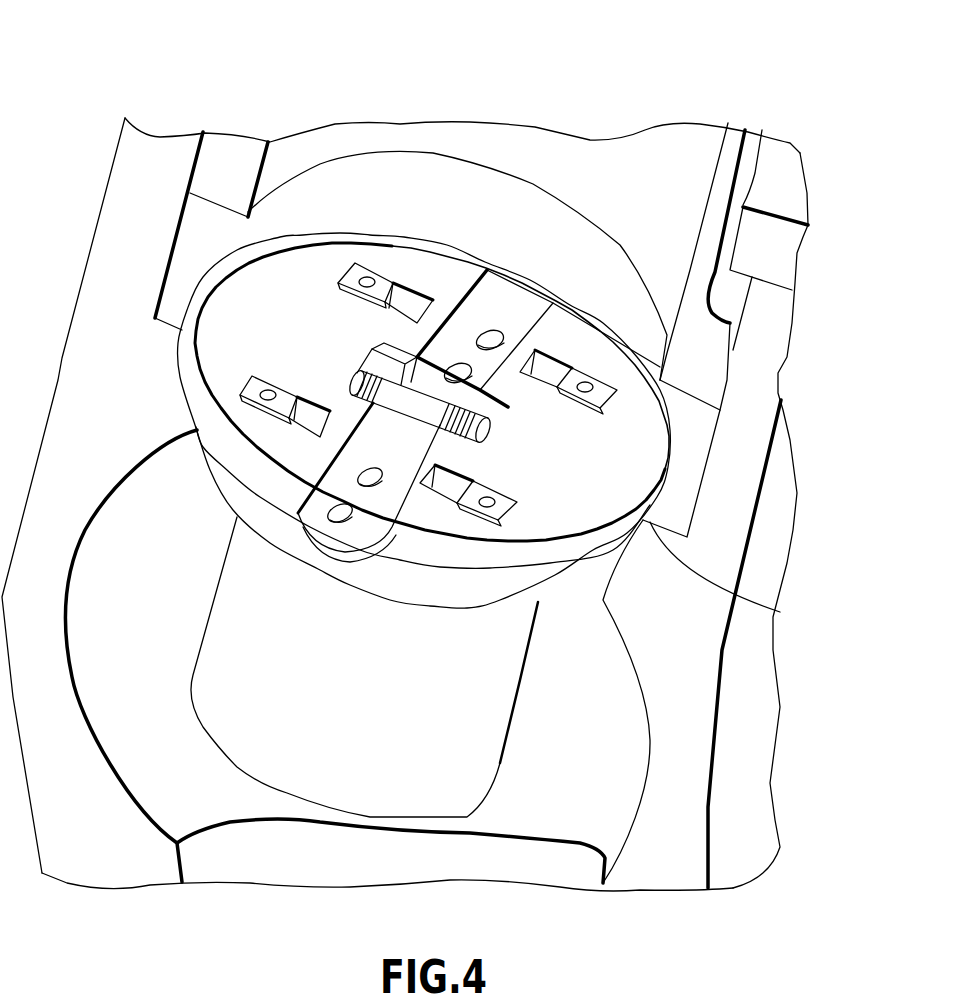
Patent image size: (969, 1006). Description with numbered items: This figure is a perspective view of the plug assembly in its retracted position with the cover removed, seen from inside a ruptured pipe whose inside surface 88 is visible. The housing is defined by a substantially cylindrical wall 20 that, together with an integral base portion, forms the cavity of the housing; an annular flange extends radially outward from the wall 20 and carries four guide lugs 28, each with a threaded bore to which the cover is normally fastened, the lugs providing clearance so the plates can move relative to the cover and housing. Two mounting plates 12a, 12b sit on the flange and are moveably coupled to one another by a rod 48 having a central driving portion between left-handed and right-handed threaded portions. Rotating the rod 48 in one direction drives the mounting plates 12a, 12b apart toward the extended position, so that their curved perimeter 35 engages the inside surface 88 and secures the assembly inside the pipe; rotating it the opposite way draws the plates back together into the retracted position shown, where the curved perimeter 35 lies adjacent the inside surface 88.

The inside surface 88 is at (302, 195).
The mounting plate 12a is at (381, 262).
The mounting plate 12b is at (573, 337).
The rod 48 is at (492, 330).
The guide lugs 28 is at (520, 490).
The curved perimeter 35 is at (780, 612).
The cylindrical wall 20 is at (252, 723).